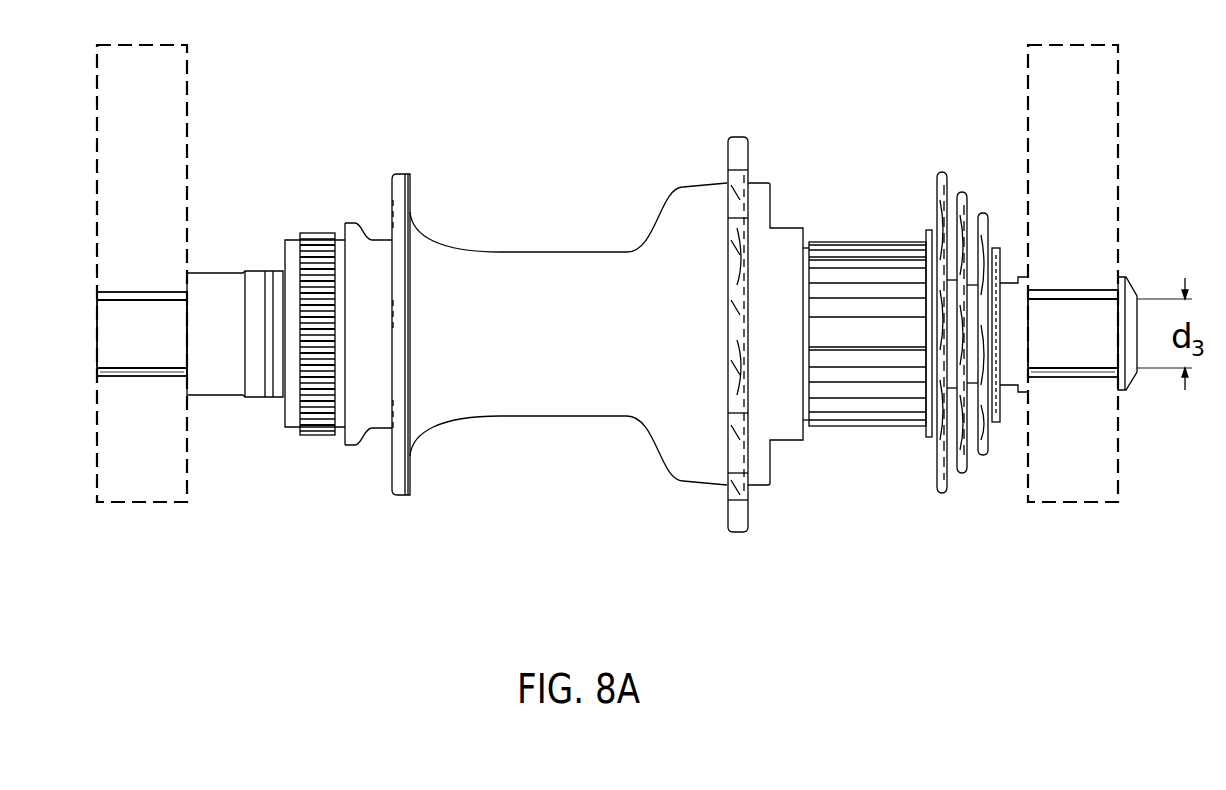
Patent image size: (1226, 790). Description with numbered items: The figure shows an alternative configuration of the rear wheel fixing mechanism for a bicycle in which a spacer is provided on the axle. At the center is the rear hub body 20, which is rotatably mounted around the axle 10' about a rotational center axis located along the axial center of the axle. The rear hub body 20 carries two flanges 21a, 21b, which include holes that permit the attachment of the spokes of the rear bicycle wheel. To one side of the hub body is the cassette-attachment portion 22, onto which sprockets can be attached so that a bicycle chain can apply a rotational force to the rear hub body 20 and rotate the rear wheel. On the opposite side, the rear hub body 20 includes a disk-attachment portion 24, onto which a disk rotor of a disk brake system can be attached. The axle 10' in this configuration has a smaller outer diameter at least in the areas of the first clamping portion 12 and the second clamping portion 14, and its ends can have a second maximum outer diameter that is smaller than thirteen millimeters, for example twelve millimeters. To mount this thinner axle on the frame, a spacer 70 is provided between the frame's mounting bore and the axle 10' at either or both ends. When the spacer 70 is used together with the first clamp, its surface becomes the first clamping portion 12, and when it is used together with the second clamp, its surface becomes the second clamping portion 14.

The axle 10' is at (1164, 313).
The first clamping portion 12 is at (1075, 290).
The second clamping portion 14 is at (157, 291).
The rear hub body 20 is at (551, 256).
The flange 21a is at (404, 173).
The flange 21b is at (736, 137).
The cassette-attachment portion 22 is at (875, 242).
The disk-attachment portion 24 is at (316, 233).
The spacer 70 is at (155, 377).